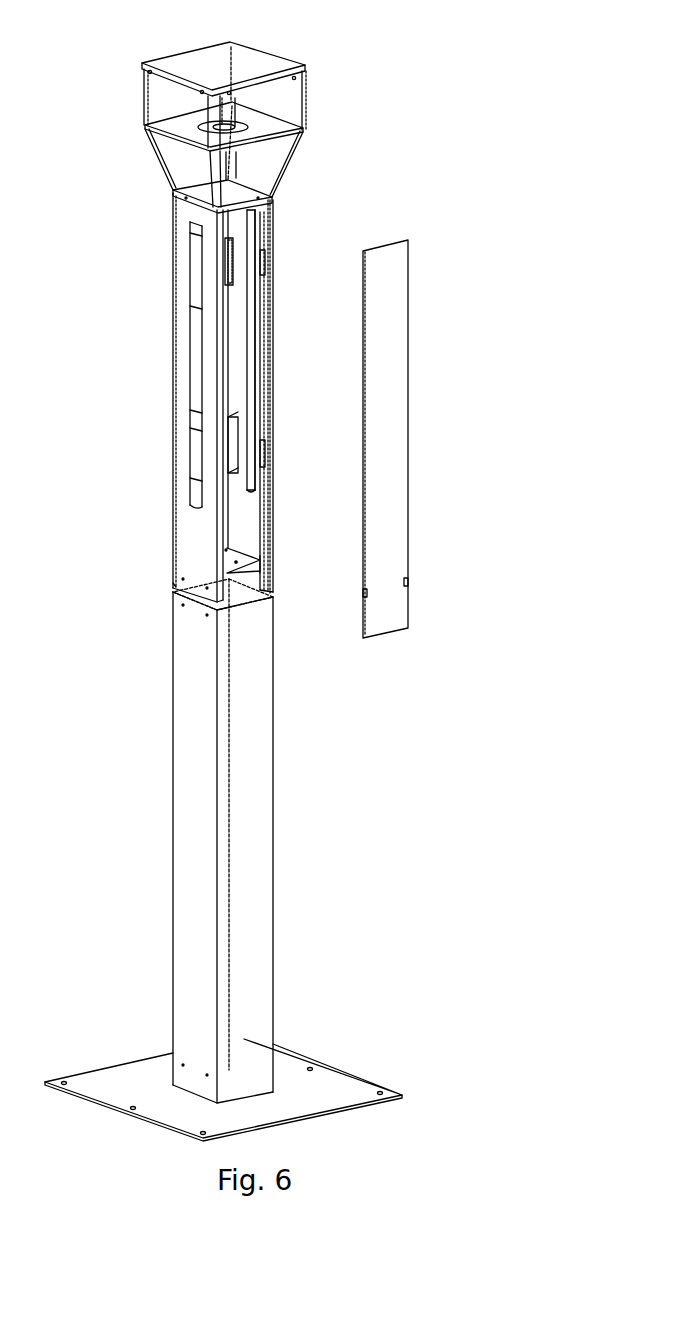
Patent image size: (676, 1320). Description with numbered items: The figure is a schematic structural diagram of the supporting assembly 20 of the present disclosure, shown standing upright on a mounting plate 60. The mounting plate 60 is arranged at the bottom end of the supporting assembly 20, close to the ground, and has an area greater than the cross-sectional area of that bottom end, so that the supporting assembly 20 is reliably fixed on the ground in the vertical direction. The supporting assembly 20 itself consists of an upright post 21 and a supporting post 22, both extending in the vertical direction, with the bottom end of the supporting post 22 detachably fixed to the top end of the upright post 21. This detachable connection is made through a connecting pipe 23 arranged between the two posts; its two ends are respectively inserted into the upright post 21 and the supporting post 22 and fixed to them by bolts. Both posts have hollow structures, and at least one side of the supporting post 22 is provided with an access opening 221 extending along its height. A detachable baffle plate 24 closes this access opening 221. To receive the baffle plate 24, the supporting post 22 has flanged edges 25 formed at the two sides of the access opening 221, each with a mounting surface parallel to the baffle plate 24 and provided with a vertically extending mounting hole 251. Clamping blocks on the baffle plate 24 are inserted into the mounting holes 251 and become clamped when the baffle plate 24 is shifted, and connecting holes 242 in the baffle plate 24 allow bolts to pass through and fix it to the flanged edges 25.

The supporting assembly 20 is at (100, 535).
The upright post 21 is at (183, 645).
The supporting post 22 is at (182, 551).
The connecting pipe 23 is at (273, 594).
The baffle plate 24 is at (400, 392).
The connecting holes 242 is at (412, 582).
The flanged edges 25 is at (225, 328).
The mounting hole 251 is at (220, 265).
The access opening 221 is at (249, 373).
The mounting plate 60 is at (333, 1079).